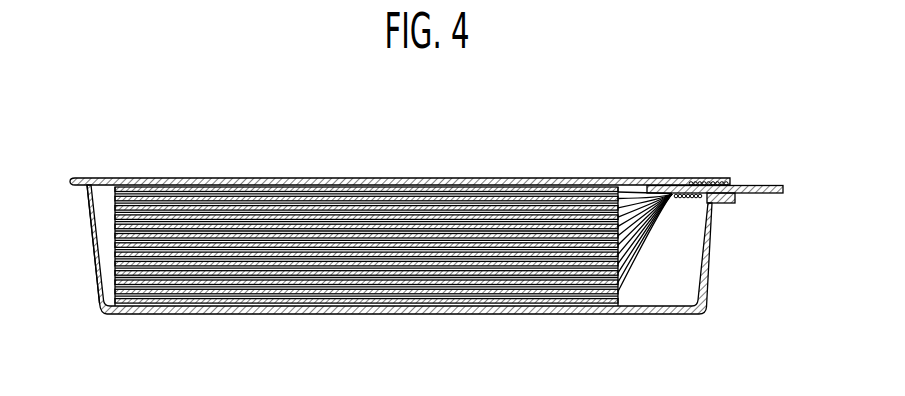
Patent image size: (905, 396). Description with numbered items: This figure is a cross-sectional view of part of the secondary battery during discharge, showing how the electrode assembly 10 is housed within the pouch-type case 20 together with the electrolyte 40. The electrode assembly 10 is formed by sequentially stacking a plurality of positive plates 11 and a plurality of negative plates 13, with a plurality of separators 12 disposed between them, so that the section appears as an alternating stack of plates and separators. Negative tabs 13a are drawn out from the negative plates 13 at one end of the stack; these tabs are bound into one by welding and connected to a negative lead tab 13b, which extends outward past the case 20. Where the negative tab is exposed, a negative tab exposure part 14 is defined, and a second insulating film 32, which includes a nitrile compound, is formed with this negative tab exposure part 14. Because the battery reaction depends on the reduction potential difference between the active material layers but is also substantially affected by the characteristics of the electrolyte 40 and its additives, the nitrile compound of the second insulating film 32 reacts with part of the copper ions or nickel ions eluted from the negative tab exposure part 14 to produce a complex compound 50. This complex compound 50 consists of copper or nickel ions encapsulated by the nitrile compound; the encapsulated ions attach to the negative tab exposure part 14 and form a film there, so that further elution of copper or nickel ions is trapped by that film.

The electrode assembly 10 is at (323, 209).
The positive plate 11 is at (452, 187).
The separator 12 is at (397, 192).
The negative plate 13 is at (345, 197).
The negative tab 13a is at (623, 287).
The negative lead tab 13b is at (757, 186).
The negative tab exposure part 14 is at (680, 180).
The case 20 is at (97, 293).
The second insulating film 32 is at (722, 182).
The electrolyte 40 is at (98, 205).
The complex compound 50 is at (697, 206).